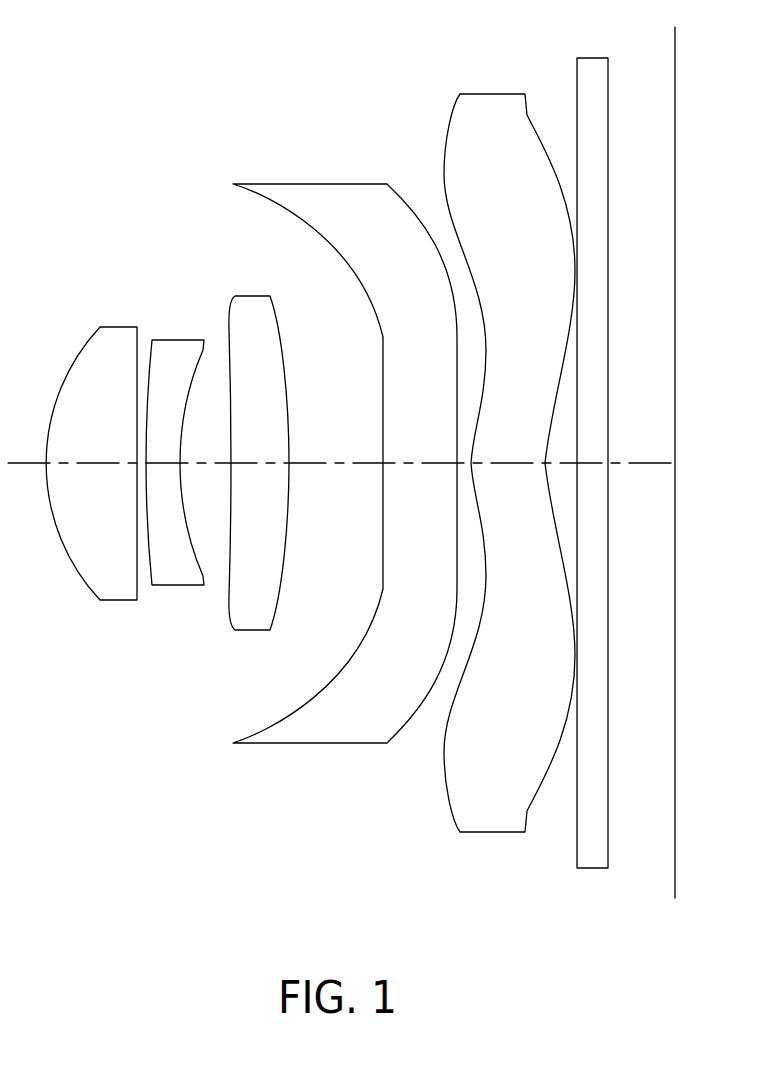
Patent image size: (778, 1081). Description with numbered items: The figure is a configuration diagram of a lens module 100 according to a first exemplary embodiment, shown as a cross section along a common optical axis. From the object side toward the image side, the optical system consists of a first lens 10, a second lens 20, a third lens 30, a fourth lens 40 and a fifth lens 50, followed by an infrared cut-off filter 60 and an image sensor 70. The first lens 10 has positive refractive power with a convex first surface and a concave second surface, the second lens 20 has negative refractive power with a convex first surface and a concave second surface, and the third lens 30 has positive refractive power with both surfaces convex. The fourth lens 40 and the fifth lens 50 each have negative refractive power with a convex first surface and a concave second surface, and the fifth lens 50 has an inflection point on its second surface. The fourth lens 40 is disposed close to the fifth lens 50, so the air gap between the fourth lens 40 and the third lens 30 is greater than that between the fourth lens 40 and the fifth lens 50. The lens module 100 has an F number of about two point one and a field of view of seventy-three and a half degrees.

The lens module 100 is at (118, 92).
The first lens 10 is at (89, 572).
The second lens 20 is at (178, 573).
The third lens 30 is at (252, 618).
The fourth lens 40 is at (327, 730).
The fifth lens 50 is at (497, 823).
The infrared cut-off filter 60 is at (597, 865).
The image sensor 70 is at (675, 868).